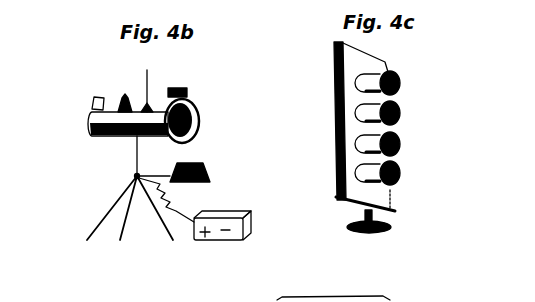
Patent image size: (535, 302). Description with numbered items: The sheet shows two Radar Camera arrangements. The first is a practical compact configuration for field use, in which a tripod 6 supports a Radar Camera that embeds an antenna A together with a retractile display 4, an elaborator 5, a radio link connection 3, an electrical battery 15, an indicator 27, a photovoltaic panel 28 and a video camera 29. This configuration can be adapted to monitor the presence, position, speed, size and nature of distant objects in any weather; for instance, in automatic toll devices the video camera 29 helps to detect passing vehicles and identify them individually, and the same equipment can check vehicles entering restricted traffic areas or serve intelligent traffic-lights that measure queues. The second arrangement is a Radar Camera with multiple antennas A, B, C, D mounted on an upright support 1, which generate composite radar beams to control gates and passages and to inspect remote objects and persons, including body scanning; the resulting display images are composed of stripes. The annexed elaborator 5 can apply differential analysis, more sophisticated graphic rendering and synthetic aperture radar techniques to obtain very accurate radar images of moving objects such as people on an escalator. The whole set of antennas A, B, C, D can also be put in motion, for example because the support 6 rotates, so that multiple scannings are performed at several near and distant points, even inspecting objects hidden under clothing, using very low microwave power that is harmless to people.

In FIG. 4c, the support pole 1 is at (336, 88).
In FIG. 4b, the radio link connection 3 is at (148, 80).
In FIG. 4b, the retractile display 4 is at (92, 100).
In FIG. 4b, the elaborator 5 is at (115, 134).
In FIG. 4b, the tripod 6 is at (104, 214).
In FIG. 4c, the tripod 6 is at (358, 235).
In FIG. 4b, the electrical battery 15 is at (200, 211).
In FIG. 4b, the indicator 27 is at (122, 95).
In FIG. 4b, the photovoltaic panel 28 is at (207, 172).
In FIG. 4b, the video camera 29 is at (190, 84).
In FIG. 4b, the antenna A is at (200, 108).
In FIG. 4c, the antenna A is at (389, 174).
In FIG. 4c, the antenna B is at (389, 144).
In FIG. 4c, the antenna C is at (388, 113).
In FIG. 4c, the antenna D is at (389, 83).